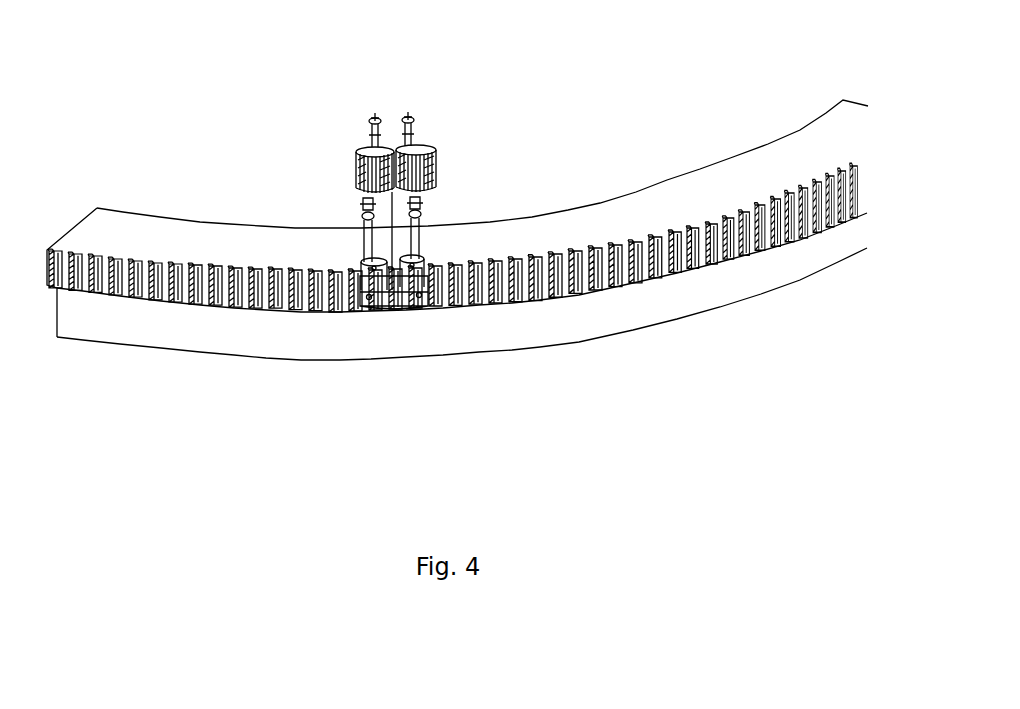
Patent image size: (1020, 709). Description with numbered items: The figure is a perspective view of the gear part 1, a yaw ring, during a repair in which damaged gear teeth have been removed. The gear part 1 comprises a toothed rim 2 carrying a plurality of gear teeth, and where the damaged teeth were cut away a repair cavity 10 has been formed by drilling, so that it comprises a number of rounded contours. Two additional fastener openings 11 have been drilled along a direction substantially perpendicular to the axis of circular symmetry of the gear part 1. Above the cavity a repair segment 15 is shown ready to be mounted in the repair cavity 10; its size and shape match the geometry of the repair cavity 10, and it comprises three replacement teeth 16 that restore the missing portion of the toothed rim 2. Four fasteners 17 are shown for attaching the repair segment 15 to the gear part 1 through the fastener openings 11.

The gear part 1 is at (755, 142).
The toothed rim 2 is at (743, 245).
The repair cavity 10 is at (395, 302).
The fastener openings 11 is at (368, 299).
The repair segment 15 is at (436, 168).
The replacement teeth 16 is at (420, 165).
The fasteners 17 is at (404, 128).